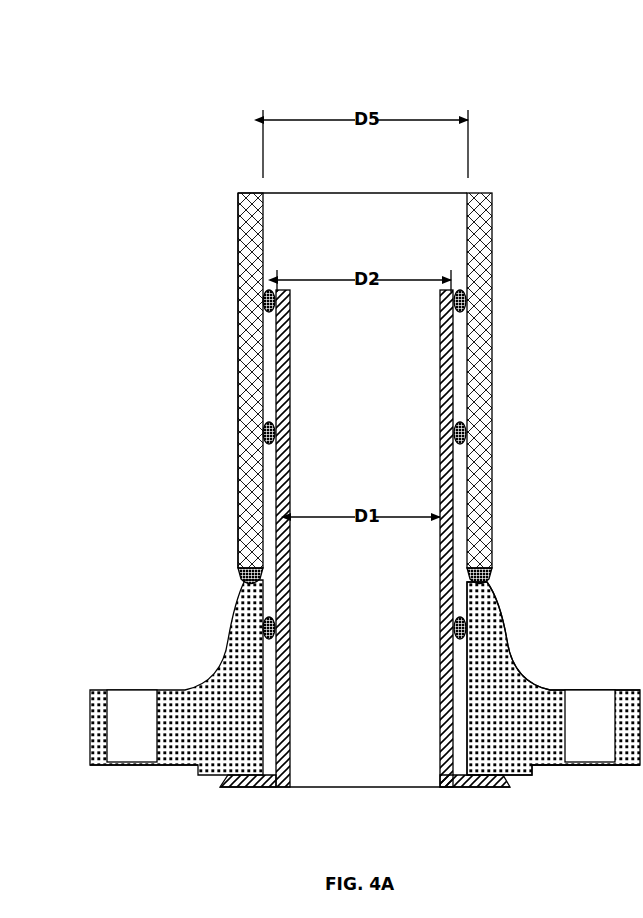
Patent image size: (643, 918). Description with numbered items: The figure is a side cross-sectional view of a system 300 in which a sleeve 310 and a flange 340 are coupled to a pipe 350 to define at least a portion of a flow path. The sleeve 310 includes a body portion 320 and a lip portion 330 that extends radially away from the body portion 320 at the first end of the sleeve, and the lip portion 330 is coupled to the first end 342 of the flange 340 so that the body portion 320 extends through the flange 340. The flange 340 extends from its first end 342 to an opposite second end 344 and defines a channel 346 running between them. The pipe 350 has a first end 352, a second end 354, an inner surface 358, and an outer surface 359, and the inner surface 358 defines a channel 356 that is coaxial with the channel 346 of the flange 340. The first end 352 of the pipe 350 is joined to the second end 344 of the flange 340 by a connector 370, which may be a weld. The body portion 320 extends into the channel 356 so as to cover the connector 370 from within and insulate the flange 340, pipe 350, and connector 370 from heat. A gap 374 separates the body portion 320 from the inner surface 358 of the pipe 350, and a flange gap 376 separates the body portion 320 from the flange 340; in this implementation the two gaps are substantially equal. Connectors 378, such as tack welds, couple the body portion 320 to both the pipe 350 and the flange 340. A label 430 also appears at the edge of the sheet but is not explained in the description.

The system 300 is at (205, 128).
The second end of pipe 354 is at (234, 190).
The pipe 350 is at (480, 378).
The channel 356 is at (348, 184).
The inner surface of pipe 358 is at (262, 226).
The outer surface of pipe 359 is at (240, 266).
The body portion 320 is at (292, 356).
The gap 374 is at (266, 478).
The flange 340 is at (508, 673).
The connector 370 is at (490, 578).
The first end of pipe 352 is at (222, 576).
The second end of flange 344 is at (507, 590).
The connectors 378 is at (268, 633).
The flange gap 376 is at (461, 735).
The lip portion 330 is at (222, 790).
The sleeve 310 is at (475, 790).
The channel 346 is at (352, 816).
The first end of flange 342 is at (552, 802).
The reference 430 is at (631, 313).